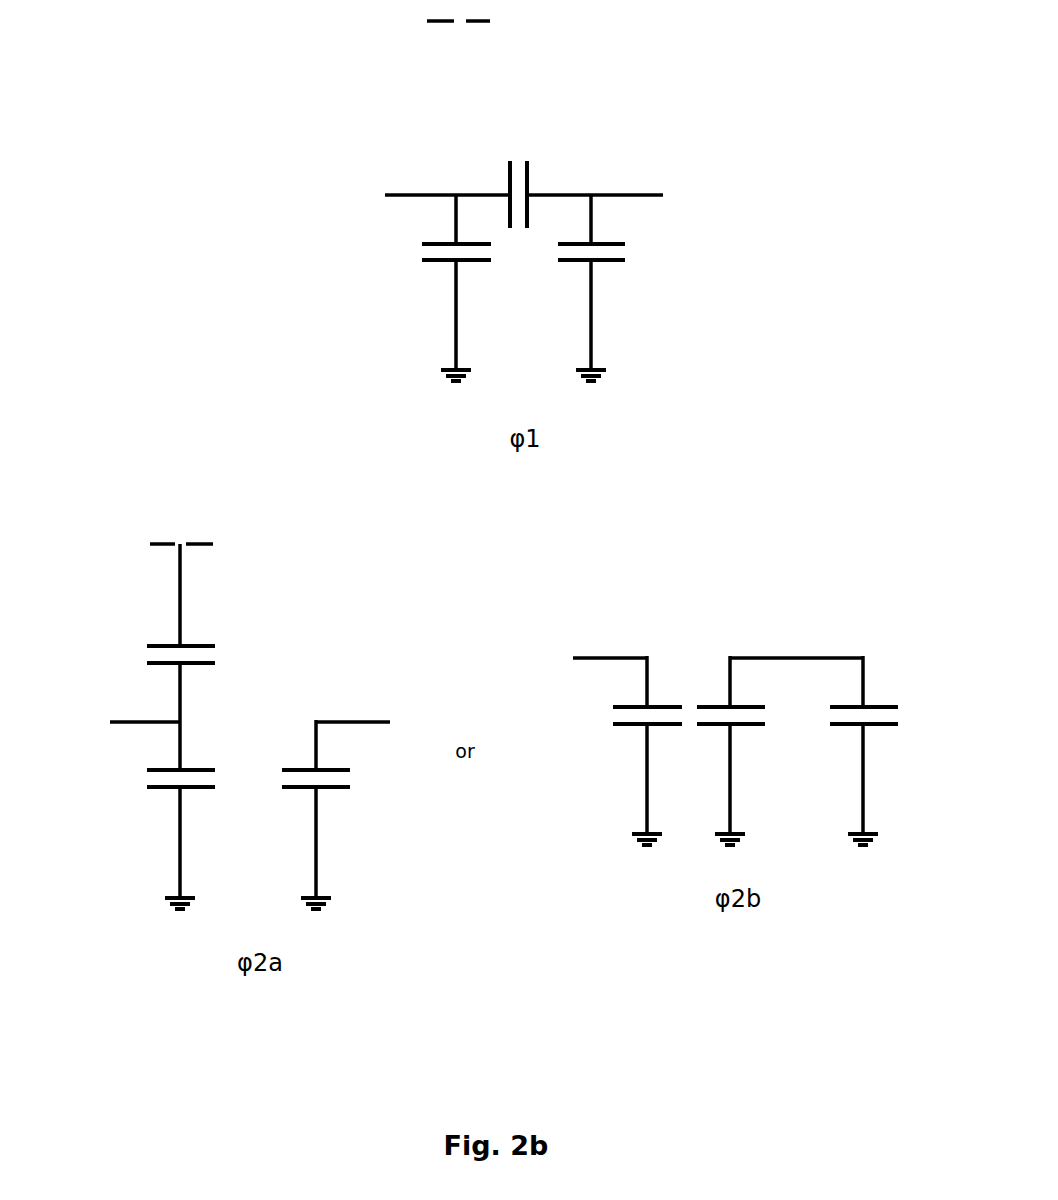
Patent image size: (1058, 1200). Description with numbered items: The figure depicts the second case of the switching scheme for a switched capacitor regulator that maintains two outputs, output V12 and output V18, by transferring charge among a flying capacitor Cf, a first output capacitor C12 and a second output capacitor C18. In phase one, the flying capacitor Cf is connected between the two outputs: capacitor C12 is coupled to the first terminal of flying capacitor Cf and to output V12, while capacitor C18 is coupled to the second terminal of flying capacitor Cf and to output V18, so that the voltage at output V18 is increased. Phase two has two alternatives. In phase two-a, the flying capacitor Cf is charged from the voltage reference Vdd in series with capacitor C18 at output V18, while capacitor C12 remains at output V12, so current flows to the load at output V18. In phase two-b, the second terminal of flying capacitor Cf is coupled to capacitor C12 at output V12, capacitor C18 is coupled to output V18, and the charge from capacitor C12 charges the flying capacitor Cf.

The second output capacitor C18 is at (389, 552).
The first output capacitor C12 is at (548, 552).
The flying capacitor Cf is at (544, 482).
The output V18 is at (357, 459).
The output V12 is at (589, 448).
The voltage reference Vdd is at (345, 282).